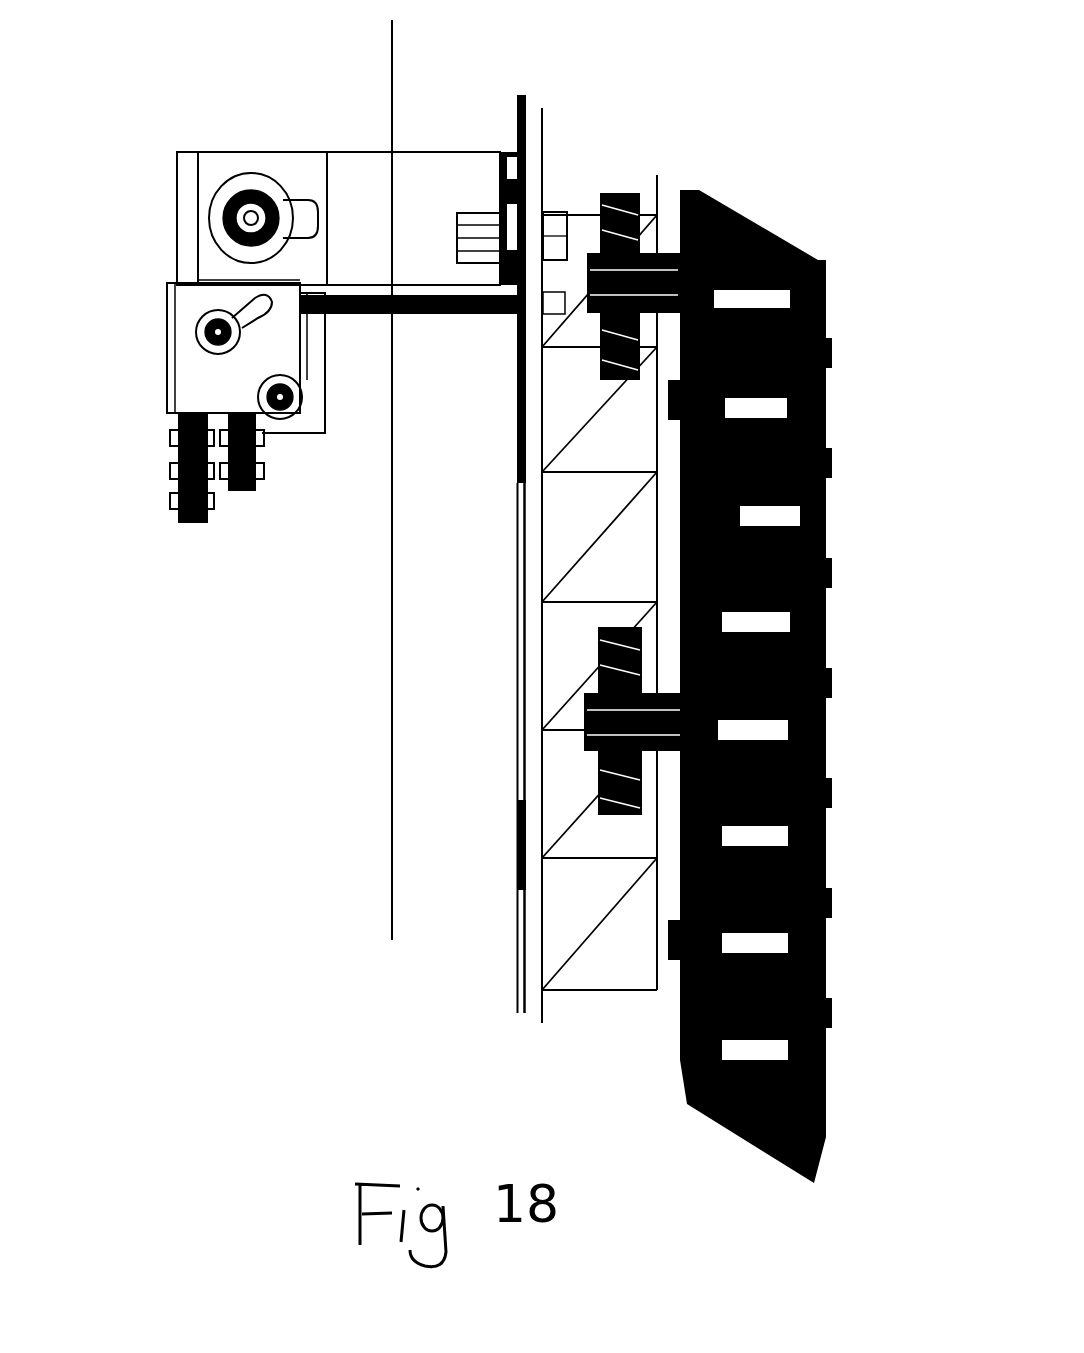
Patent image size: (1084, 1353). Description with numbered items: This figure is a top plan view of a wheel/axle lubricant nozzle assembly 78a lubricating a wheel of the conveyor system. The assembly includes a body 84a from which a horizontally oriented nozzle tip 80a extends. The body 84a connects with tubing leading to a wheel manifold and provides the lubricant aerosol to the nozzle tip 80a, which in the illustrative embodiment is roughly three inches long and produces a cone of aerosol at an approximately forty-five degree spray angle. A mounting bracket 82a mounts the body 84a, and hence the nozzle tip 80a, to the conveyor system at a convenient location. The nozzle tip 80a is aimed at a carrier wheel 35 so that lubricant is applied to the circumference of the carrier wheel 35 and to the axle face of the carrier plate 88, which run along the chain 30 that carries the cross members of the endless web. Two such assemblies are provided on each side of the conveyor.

The wheel/axle lubricant nozzle assembly 78a is at (386, 156).
The mounting bracket 82a is at (423, 132).
The body 84a is at (176, 362).
The nozzle tip 80a is at (417, 317).
The carrier wheel 35 is at (630, 193).
The carrier plate 88 is at (672, 405).
The chain 30 is at (828, 573).